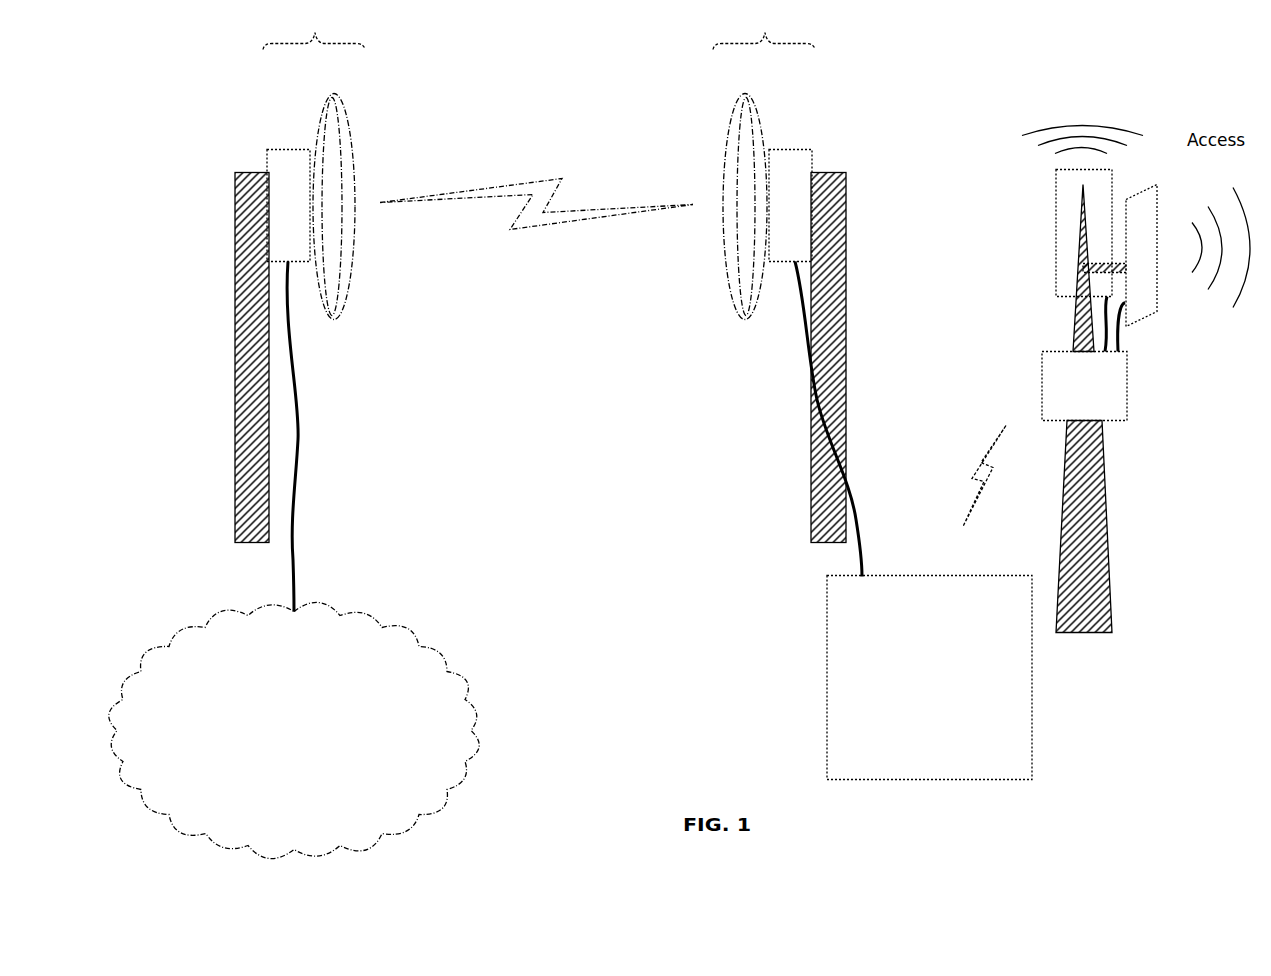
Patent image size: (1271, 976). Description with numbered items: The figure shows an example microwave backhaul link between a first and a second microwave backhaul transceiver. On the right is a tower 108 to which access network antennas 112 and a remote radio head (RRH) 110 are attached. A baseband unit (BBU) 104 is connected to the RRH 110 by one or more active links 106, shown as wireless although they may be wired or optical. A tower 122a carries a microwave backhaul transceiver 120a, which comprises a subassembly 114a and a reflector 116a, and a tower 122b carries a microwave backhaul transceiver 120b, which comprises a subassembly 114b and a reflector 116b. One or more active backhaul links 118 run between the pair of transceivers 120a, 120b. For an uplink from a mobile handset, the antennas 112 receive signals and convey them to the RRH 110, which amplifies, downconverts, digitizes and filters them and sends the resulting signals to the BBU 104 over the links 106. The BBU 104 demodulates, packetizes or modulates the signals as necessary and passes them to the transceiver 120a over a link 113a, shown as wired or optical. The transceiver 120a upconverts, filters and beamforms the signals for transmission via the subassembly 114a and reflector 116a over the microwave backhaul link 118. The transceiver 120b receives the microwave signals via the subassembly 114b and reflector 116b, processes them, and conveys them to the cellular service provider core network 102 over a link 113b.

The core network 102 is at (294, 730).
The baseband unit 104 is at (929, 678).
The link 106 is at (974, 478).
The tower 108 is at (1060, 563).
The remote radio head 110 is at (1084, 386).
The access network antenna 112 is at (1056, 190).
The link 113a is at (862, 540).
The link 113b is at (299, 462).
The subassembly 114a is at (793, 151).
The subassembly 114b is at (295, 151).
The reflector 116a is at (740, 94).
The reflector 116b is at (340, 94).
The microwave backhaul link 118 is at (522, 183).
The microwave backhaul transceiver 120a is at (765, 33).
The microwave backhaul transceiver 120b is at (315, 33).
The tower 122a is at (848, 322).
The tower 122b is at (234, 320).